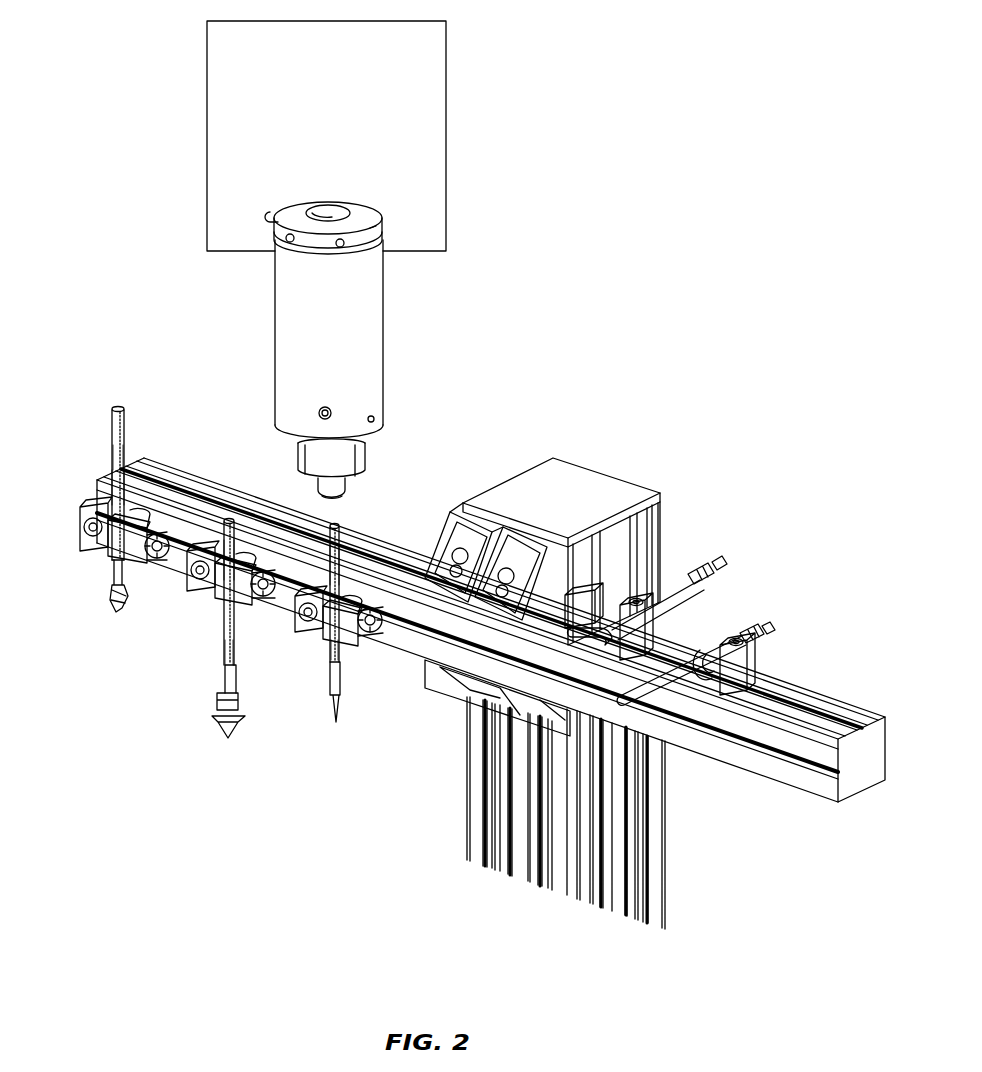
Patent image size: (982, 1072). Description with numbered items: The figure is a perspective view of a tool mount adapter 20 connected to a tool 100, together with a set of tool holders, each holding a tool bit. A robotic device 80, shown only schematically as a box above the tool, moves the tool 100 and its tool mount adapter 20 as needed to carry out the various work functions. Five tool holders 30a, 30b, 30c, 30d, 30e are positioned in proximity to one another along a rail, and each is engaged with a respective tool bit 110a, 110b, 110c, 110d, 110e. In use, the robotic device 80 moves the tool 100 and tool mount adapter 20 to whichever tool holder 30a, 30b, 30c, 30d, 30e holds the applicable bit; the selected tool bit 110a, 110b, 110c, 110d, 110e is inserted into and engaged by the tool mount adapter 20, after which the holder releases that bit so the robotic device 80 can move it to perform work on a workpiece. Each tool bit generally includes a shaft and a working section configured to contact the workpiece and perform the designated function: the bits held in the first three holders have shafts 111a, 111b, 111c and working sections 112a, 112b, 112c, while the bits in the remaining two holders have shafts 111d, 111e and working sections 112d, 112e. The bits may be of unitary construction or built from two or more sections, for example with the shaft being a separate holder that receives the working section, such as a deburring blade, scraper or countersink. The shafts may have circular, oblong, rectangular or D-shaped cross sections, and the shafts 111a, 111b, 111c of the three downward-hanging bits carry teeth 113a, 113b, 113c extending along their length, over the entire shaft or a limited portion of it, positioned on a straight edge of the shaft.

The robotic device 80 is at (410, 97).
The tool 100 is at (350, 340).
The tool mount adapter 20 is at (352, 463).
The tool holder 30a is at (87, 545).
The tool holder 30b is at (203, 587).
The tool holder 30c is at (312, 624).
The tool holder 30d is at (642, 625).
The tool holder 30e is at (750, 667).
The tool bit 110a is at (110, 437).
The tool bit 110b is at (222, 636).
The tool bit 110c is at (330, 638).
The tool bit 110d is at (693, 570).
The tool bit 110e is at (745, 632).
The shaft 111a is at (113, 453).
The shaft 111b is at (222, 653).
The shaft 111c is at (329, 655).
The shaft 111d is at (672, 580).
The shaft 111e is at (672, 677).
The working section 112a is at (110, 608).
The working section 112b is at (218, 730).
The working section 112c is at (330, 706).
The working section 112d is at (722, 560).
The working section 112e is at (772, 628).
The teeth 113a is at (122, 450).
The teeth 113b is at (224, 532).
The teeth 113c is at (341, 567).